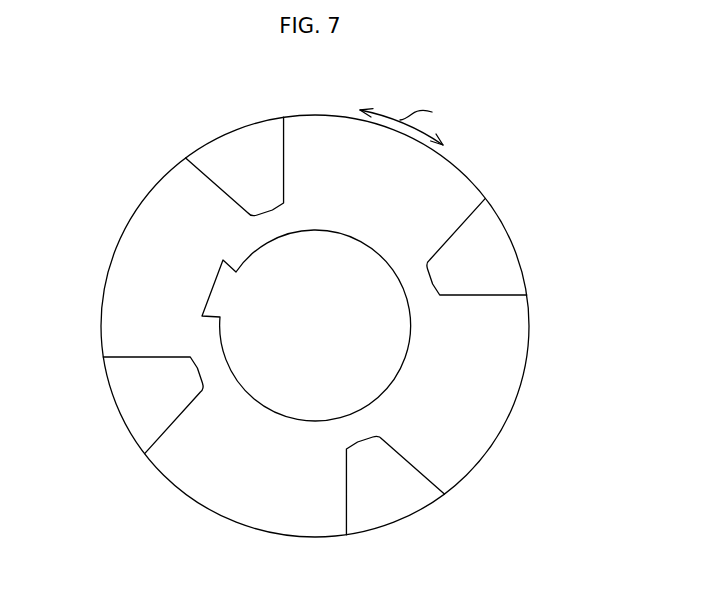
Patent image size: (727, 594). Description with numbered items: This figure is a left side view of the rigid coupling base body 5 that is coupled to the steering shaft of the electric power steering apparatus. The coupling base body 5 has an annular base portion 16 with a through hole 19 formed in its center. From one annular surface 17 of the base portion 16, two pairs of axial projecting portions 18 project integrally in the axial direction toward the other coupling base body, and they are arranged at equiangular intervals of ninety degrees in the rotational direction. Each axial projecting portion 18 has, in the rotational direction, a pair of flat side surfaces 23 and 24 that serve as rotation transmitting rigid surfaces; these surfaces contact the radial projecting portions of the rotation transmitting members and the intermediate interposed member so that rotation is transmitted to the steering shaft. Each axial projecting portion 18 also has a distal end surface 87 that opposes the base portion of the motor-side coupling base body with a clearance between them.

The coupling base body 5 is at (502, 462).
The annular base portion 16 is at (137, 275).
The annular surface 17 is at (502, 348).
The axial projecting portion 18 is at (243, 146).
The through hole 19 is at (297, 360).
The flat side surface 23 is at (207, 179).
The flat side surface 24 is at (287, 156).
The distal end surface 87 is at (224, 152).